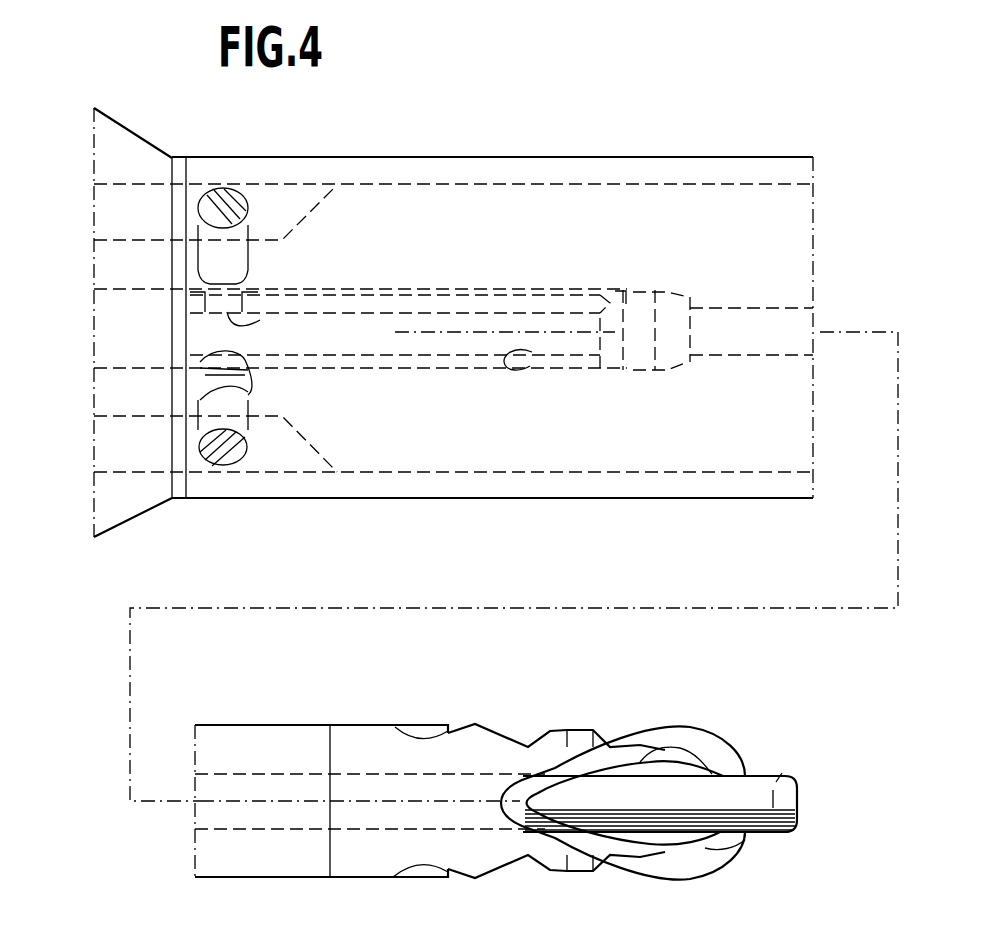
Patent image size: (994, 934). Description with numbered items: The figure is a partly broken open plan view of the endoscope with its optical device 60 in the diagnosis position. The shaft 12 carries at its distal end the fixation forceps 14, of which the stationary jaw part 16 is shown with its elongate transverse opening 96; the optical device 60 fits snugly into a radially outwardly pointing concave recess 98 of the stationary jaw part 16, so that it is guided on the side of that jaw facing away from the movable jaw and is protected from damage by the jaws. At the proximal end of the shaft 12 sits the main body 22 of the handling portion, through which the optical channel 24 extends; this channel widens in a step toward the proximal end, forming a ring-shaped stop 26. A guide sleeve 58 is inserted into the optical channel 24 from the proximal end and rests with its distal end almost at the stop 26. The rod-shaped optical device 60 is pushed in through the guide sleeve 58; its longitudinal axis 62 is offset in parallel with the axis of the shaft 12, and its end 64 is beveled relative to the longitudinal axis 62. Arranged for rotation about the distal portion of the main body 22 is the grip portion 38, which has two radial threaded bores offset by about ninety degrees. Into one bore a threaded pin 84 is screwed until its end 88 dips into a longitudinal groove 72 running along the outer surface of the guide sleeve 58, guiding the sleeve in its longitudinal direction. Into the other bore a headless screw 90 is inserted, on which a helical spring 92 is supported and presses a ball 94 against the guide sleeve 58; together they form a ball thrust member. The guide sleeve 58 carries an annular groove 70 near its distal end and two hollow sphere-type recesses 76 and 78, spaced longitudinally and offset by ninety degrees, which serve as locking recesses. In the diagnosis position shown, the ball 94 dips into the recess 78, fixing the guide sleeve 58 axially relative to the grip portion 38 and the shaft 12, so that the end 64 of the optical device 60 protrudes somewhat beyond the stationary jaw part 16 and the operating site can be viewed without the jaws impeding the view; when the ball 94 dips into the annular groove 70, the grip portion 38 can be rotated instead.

The shaft 12 is at (262, 722).
The fixation forceps 14 is at (718, 722).
The stationary jaw part 16 is at (497, 752).
The main body 22 is at (805, 232).
The optical channel 24 is at (195, 812).
The ring-shaped stop 26 is at (689, 292).
The grip portion 38 is at (690, 157).
The guide sleeve 58 is at (330, 340).
The optical device 60 is at (796, 312).
The longitudinal axis 62 is at (413, 350).
The end 64 is at (790, 793).
The annular groove 70 is at (608, 290).
The longitudinal groove 72 is at (404, 303).
The recess 76 is at (522, 362).
The recess 78 is at (147, 343).
The threaded pin 84 is at (219, 194).
The end 88 is at (272, 240).
The headless screw 90 is at (225, 463).
The helical spring 92 is at (200, 377).
The ball 94 is at (200, 400).
The elongate transverse opening 96 is at (718, 847).
The concave recess 98 is at (642, 768).